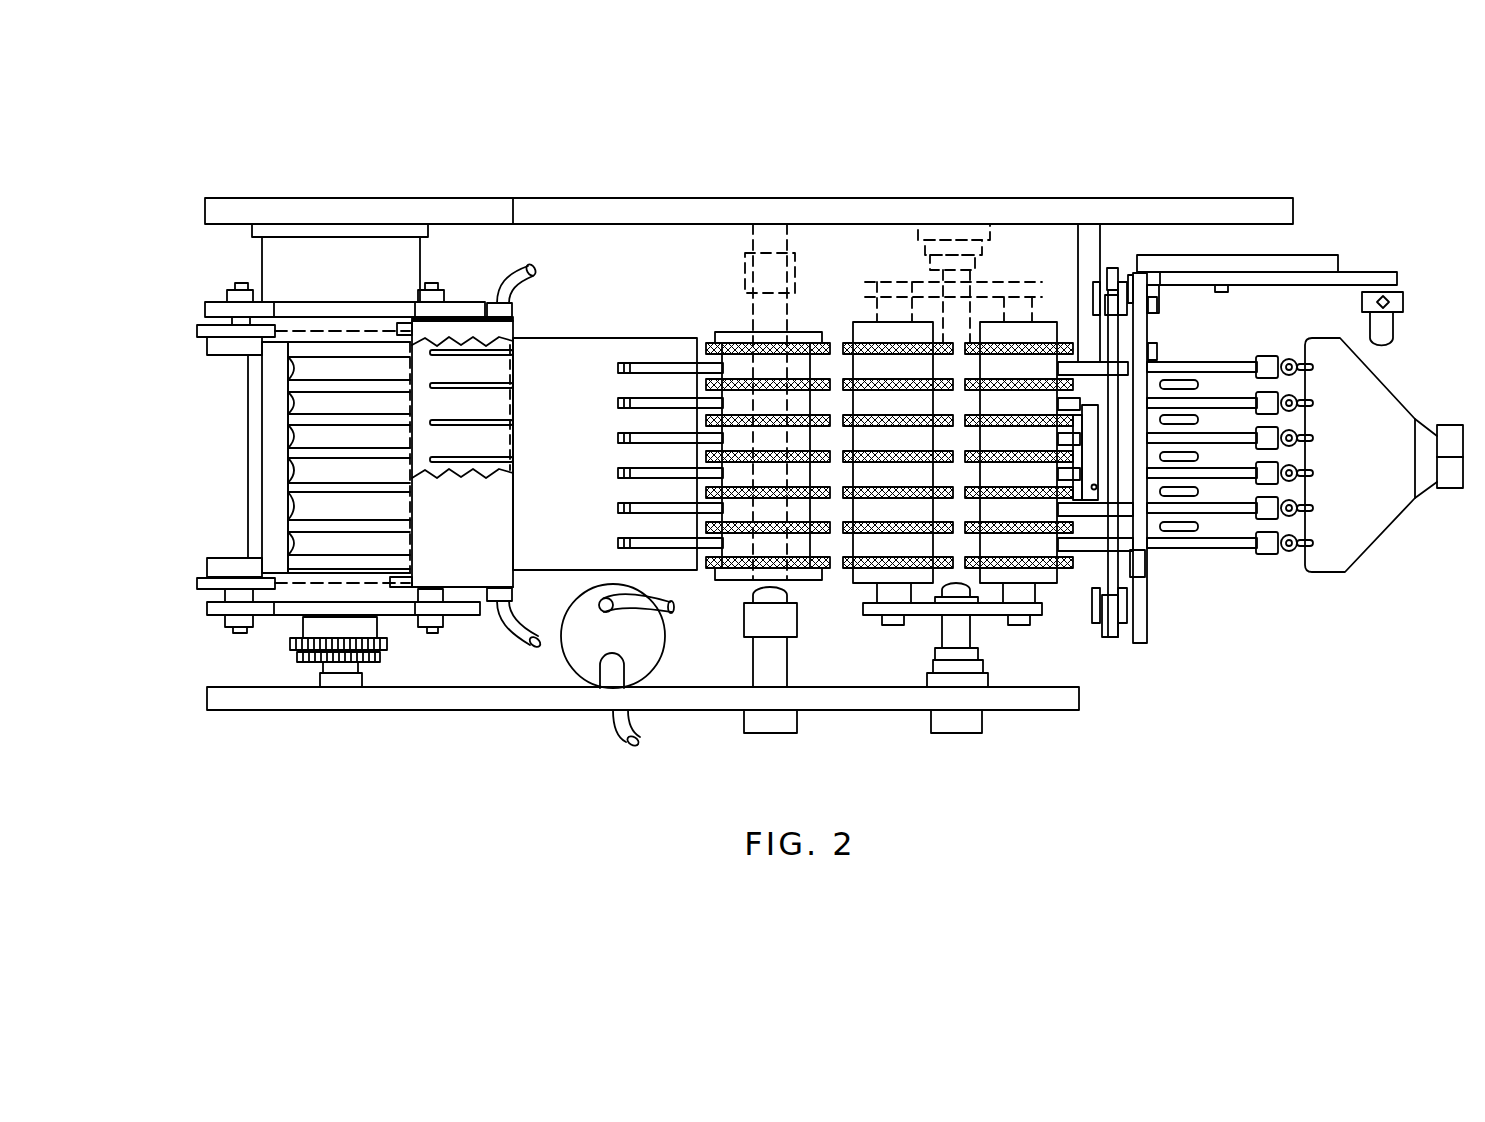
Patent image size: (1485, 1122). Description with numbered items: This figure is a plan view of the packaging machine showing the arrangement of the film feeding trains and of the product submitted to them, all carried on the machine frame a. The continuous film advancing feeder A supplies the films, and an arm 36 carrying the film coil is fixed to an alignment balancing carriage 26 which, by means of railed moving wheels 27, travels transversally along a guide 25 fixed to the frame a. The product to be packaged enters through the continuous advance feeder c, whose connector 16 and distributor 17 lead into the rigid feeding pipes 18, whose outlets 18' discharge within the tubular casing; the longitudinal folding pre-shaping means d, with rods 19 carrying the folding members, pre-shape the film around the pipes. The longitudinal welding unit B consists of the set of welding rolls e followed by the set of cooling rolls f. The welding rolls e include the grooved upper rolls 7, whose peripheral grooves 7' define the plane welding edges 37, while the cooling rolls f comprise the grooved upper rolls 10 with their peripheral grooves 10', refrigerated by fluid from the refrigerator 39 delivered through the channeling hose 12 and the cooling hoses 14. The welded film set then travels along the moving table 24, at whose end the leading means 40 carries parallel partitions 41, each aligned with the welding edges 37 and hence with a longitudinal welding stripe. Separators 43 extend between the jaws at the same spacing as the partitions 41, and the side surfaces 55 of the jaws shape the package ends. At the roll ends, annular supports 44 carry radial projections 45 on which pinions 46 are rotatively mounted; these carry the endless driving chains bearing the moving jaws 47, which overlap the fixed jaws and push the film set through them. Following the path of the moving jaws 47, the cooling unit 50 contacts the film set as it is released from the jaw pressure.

The machine frame a is at (568, 192).
The grooved upper rolls 7 is at (958, 402).
The peripheral grooves 7' is at (943, 584).
The grooved upper rolls 10 is at (776, 430).
The peripheral grooves 10' is at (750, 599).
The channeling hose 12 is at (668, 612).
The cooling hoses 14 is at (512, 263).
The connector 16 is at (1448, 487).
The distributor 17 is at (1347, 563).
The rigid feeding pipes 18 is at (965, 412).
The outlets 18' is at (670, 409).
The rods 19 is at (1198, 490).
The moving table 24 is at (566, 352).
The guide 25 is at (1099, 459).
The alignment balancing carriage 26 is at (1145, 562).
The railed moving wheels 27 is at (1111, 270).
The arm 36 is at (1312, 262).
The welding edges 37 is at (925, 535).
The refrigerator 39 is at (640, 665).
The leading means 40 is at (486, 367).
The partitions 41 is at (515, 385).
The separators 43 is at (297, 490).
The annular supports 44 is at (328, 303).
The radial projections 45 is at (218, 305).
The pinions 46 is at (205, 331).
The moving jaws 47 is at (248, 398).
The cooling unit 50 is at (466, 545).
The side surface 55 is at (297, 440).
The continuous film advancing feeder A is at (1383, 548).
The longitudinal welding unit B is at (991, 268).
The continuous advance feeder of product c is at (1411, 394).
The longitudinal folding pre-shaping means d is at (1204, 355).
The set of welding rolls e is at (870, 624).
The set of cooling rolls f is at (804, 296).